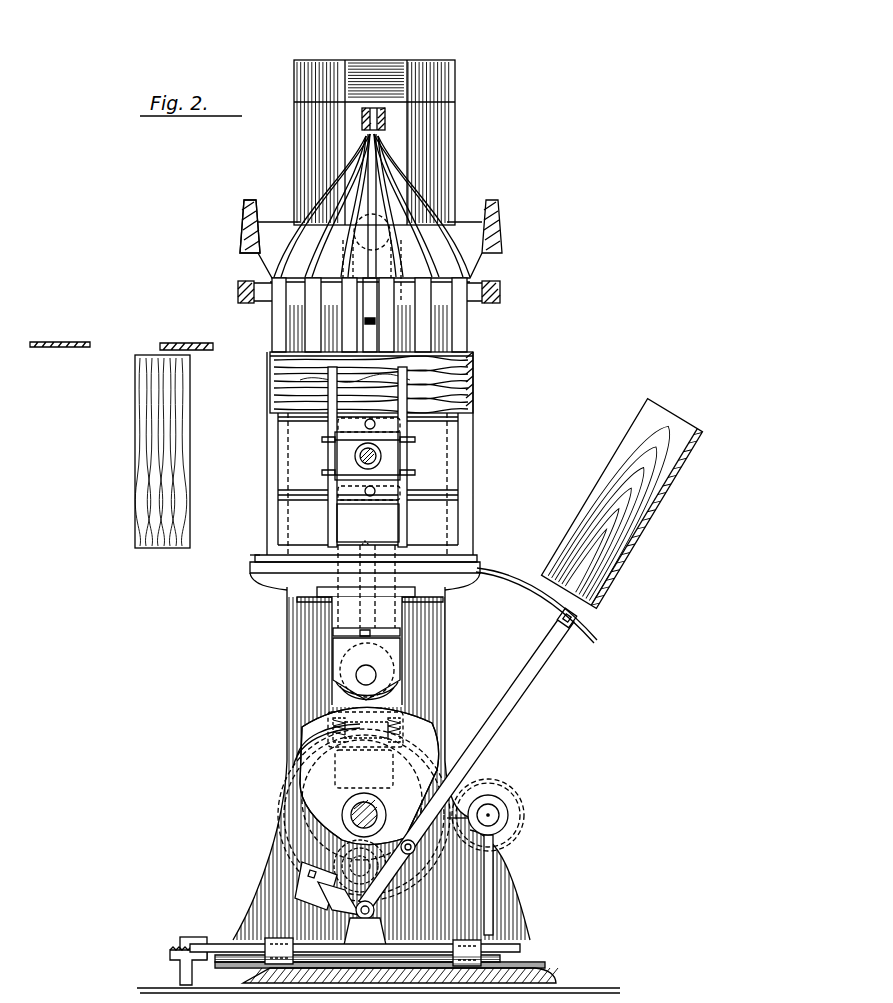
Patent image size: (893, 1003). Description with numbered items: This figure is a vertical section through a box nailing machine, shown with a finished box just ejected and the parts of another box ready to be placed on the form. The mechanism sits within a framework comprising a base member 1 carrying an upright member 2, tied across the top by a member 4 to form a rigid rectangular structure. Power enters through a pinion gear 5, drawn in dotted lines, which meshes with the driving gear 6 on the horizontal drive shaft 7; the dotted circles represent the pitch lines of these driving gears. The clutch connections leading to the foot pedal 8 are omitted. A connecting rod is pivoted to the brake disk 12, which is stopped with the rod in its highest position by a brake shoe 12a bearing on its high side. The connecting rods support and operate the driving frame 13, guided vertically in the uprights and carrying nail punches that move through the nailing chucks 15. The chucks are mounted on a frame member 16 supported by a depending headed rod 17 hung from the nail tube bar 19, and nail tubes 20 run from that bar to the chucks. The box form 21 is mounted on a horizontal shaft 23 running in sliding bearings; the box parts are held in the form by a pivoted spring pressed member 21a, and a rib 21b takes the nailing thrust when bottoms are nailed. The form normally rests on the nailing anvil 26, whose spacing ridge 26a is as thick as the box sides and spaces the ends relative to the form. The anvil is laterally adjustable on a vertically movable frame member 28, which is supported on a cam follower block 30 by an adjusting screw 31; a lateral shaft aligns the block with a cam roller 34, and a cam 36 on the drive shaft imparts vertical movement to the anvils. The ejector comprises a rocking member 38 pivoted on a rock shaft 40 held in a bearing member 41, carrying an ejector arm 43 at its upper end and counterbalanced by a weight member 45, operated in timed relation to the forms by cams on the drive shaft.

The base member 1 is at (556, 983).
The upright member 2 is at (296, 681).
The top tie member 4 is at (382, 70).
The pinion gear 5 is at (512, 810).
The driving gear 6 is at (278, 808).
The horizontal drive shaft 7 is at (354, 818).
The foot pedal 8 is at (178, 953).
The brake disk 12 is at (312, 790).
The brake shoe 12a is at (335, 755).
The driving frame 13 is at (262, 260).
The nailing chucks 15 is at (352, 349).
The frame member 16 is at (238, 291).
The headed rod 17 is at (373, 197).
The nail tube bar 19 is at (360, 118).
The nail tubes 20 is at (344, 212).
The box form 21 is at (277, 518).
The spring pressed member 21a is at (330, 425).
The rib 21b is at (437, 495).
The horizontal shaft 23 is at (358, 457).
The nailing anvil 26 is at (275, 573).
The spacing ridge 26a is at (255, 556).
The frame member 28 is at (348, 607).
The cam follower block 30 is at (345, 648).
The adjusting screw 31 is at (368, 631).
The cam roller 34 is at (350, 699).
The cam 36 is at (305, 732).
The rocking member 38 is at (510, 705).
The rock shaft 40 is at (374, 908).
The bearing member 41 is at (375, 943).
The ejector arm 43 is at (525, 596).
The weight member 45 is at (300, 892).